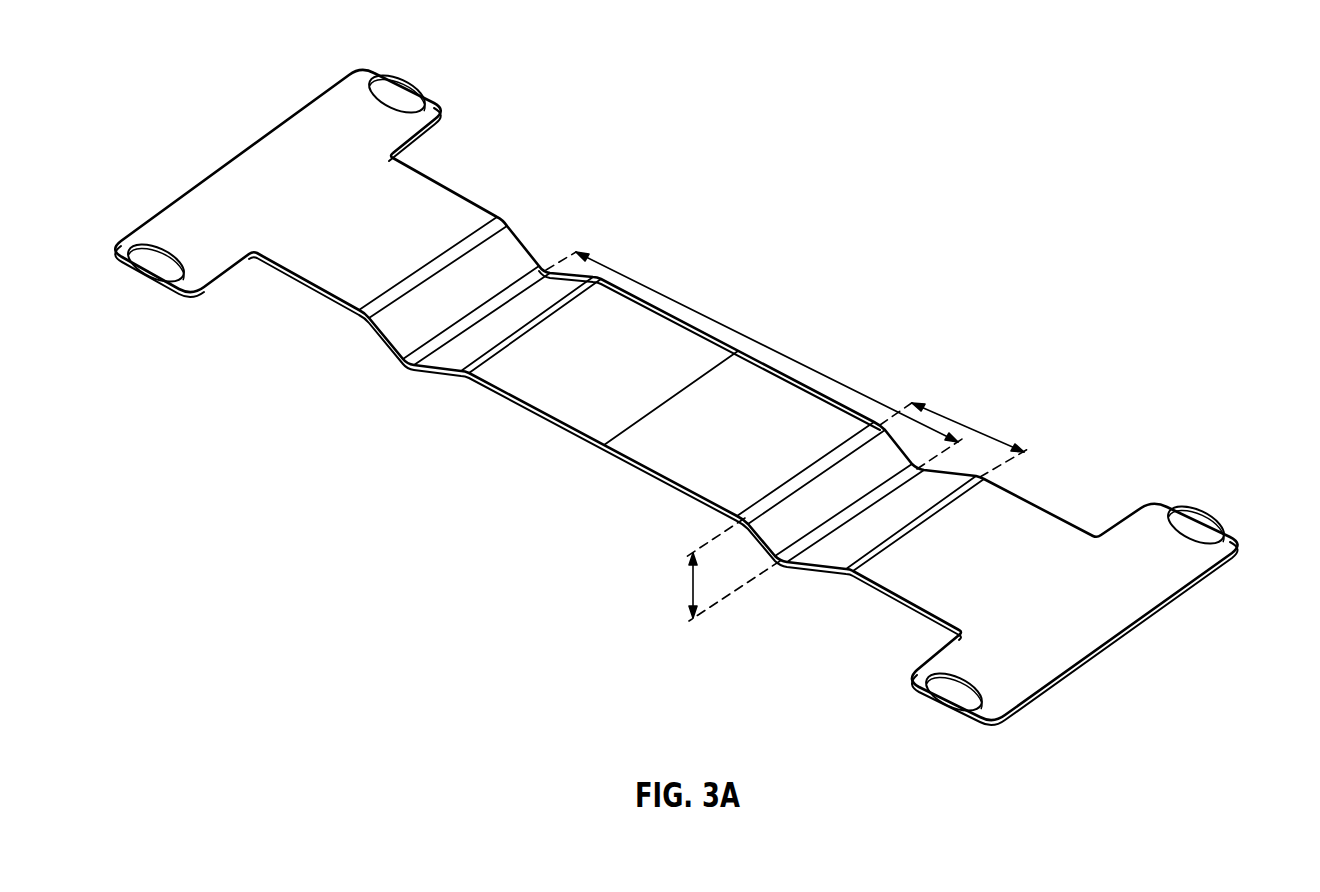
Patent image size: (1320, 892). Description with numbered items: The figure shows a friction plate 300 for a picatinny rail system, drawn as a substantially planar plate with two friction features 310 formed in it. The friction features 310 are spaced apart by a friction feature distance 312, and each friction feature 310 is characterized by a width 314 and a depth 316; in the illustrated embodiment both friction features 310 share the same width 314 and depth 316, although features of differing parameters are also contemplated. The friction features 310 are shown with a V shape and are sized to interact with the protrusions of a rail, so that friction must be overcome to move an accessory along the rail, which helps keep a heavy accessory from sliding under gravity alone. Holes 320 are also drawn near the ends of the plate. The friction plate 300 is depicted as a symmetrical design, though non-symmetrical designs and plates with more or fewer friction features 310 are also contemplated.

The friction plate 300 is at (422, 203).
The friction features 310 is at (420, 373).
The friction feature distance 312 is at (767, 345).
The width 314 is at (967, 426).
The depth 316 is at (687, 588).
The mounting hole 320 is at (400, 100).